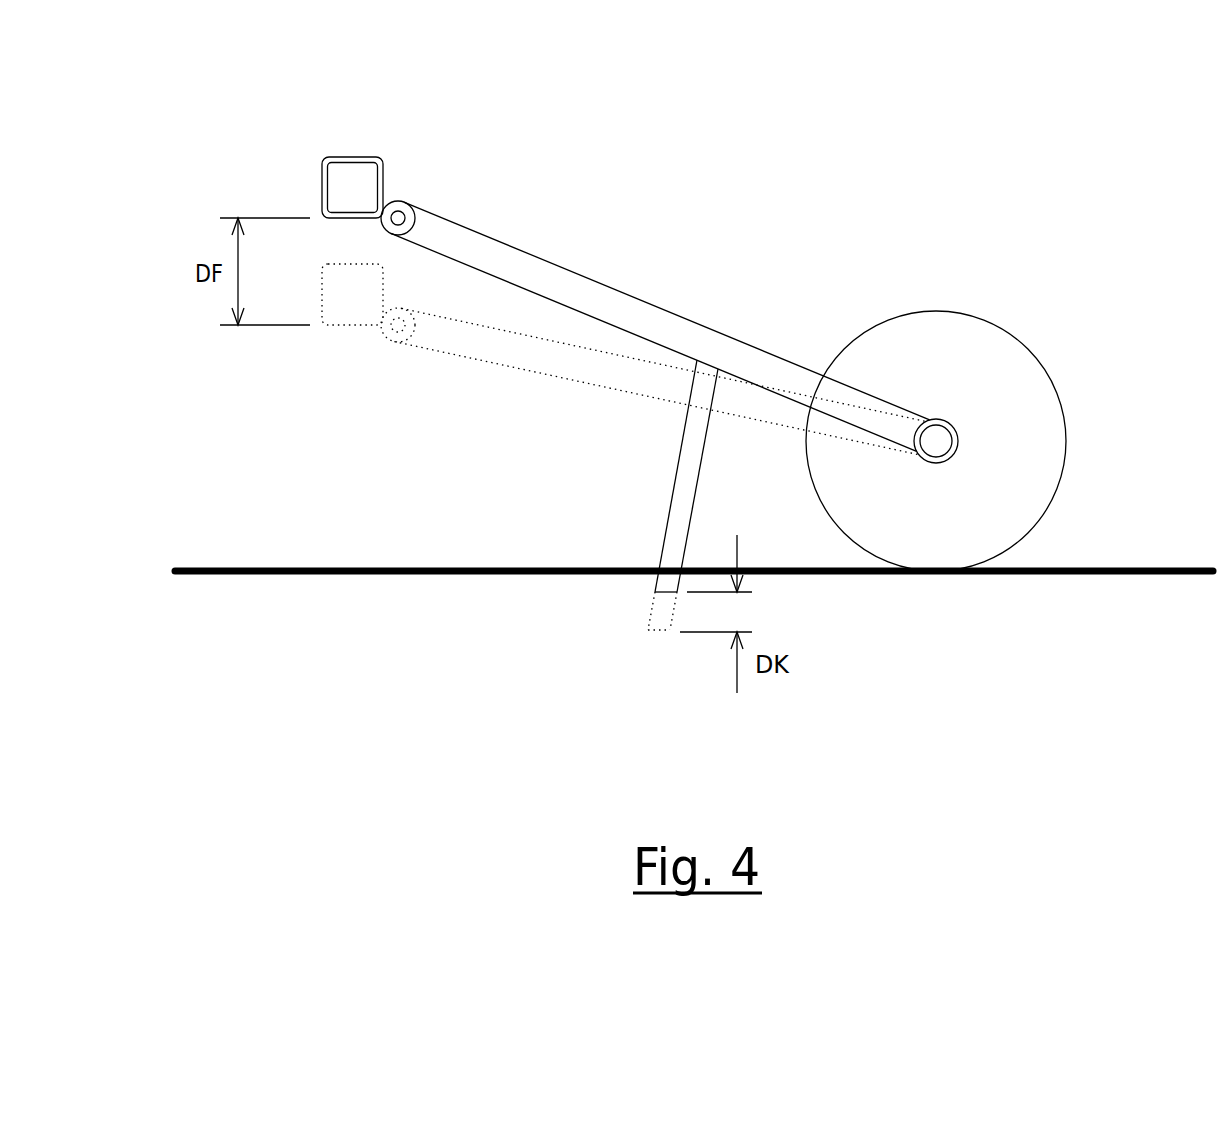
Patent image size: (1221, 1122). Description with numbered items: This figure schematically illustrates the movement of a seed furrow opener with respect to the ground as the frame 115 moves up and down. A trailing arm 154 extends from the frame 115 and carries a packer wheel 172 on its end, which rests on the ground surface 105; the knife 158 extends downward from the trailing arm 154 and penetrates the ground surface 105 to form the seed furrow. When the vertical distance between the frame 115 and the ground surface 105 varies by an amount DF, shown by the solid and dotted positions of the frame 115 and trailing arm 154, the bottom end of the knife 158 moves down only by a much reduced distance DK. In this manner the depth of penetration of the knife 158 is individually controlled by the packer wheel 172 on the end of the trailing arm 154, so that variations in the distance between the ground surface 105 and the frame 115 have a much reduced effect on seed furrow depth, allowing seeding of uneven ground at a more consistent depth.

The ground surface 105 is at (1123, 569).
The frame 115 is at (357, 157).
The trailing arm 154 is at (630, 300).
The knife 158 is at (667, 522).
The packer wheel 172 is at (1020, 340).